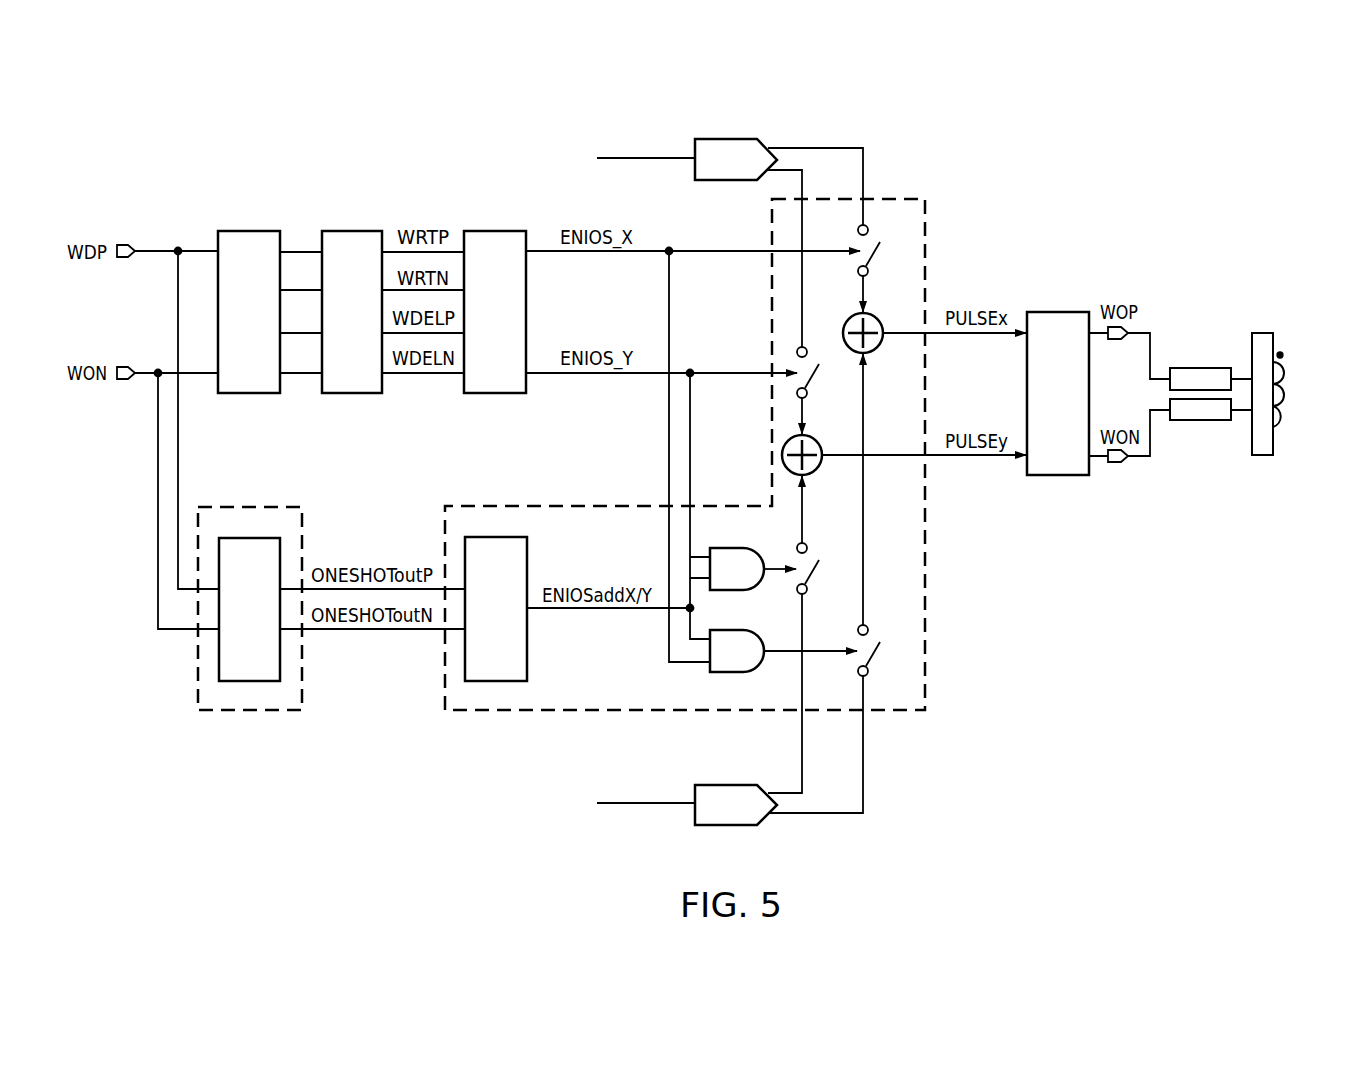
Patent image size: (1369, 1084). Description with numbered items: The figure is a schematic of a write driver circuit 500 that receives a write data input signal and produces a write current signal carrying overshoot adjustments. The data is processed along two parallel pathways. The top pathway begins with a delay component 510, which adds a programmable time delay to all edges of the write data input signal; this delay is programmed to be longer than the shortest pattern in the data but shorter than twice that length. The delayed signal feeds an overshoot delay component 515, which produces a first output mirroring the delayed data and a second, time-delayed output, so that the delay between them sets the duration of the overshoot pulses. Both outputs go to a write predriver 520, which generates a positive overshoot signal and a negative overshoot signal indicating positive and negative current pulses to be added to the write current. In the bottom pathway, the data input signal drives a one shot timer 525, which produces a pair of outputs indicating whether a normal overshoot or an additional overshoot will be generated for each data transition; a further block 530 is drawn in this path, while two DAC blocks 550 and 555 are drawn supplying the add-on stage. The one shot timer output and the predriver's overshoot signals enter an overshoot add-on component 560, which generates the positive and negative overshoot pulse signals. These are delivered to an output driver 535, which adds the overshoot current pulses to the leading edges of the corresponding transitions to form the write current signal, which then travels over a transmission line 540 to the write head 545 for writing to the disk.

The write driver circuit 500 is at (1109, 200).
The delay component 510 is at (269, 325).
The overshoot delay component 515 is at (371, 325).
The write predriver 520 is at (514, 325).
The one shot timer 525 is at (269, 620).
The one-shot output logic block 530 is at (515, 620).
The output driver 535 is at (1077, 406).
The transmission line 540 is at (1208, 352).
The write head 545 is at (1291, 386).
The overshoot add-on DAC 550 is at (726, 826).
The overshoot DAC 555 is at (726, 181).
The overshoot add-on component 560 is at (930, 532).